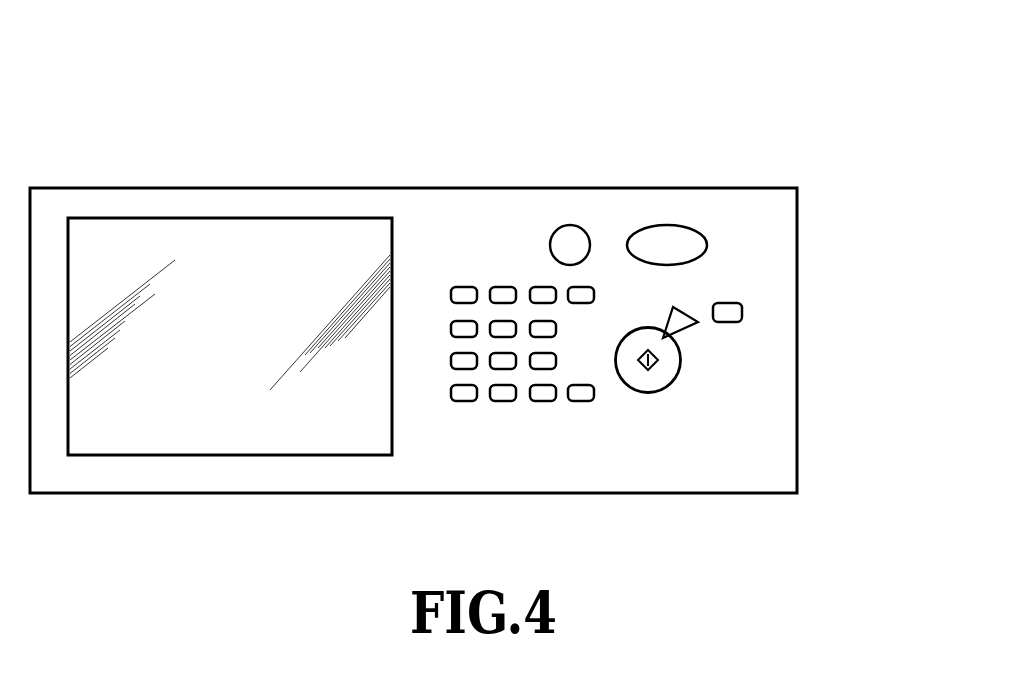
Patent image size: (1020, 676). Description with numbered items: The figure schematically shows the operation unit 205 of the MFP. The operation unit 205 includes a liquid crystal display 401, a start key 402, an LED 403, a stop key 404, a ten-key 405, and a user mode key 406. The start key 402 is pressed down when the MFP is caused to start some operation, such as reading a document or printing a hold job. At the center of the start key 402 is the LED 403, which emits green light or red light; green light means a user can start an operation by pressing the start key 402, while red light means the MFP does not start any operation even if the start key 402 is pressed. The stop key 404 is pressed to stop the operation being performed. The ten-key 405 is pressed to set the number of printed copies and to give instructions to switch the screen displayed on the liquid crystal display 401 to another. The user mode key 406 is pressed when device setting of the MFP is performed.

The operation unit 205 is at (745, 93).
The liquid crystal display 401 is at (205, 218).
The start key 402 is at (683, 361).
The LED 403 is at (642, 349).
The stop key 404 is at (686, 312).
The ten-key 405 is at (503, 286).
The user mode key 406 is at (742, 312).